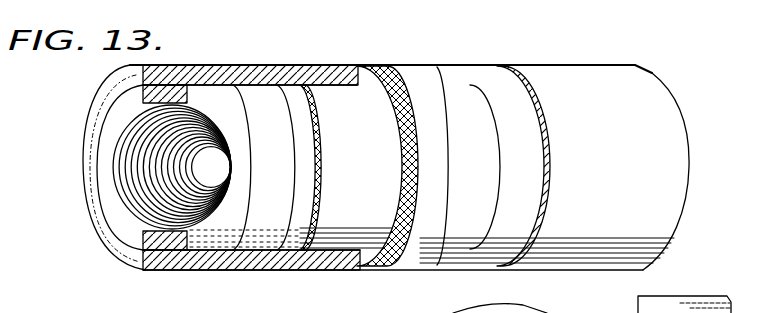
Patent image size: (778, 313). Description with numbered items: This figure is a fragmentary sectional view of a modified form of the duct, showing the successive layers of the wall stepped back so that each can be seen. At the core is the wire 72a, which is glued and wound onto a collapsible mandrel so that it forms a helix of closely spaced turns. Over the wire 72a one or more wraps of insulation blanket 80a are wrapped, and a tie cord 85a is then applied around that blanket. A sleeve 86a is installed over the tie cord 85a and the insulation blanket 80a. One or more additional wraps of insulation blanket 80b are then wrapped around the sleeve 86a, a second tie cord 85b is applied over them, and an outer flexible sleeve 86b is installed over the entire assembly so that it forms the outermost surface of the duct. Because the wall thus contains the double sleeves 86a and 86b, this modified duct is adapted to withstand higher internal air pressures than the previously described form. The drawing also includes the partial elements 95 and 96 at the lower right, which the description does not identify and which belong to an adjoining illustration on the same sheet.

The wire 72a is at (128, 203).
The insulation blanket 80a is at (127, 238).
The insulation blanket 80b is at (297, 65).
The tie cord 85a is at (255, 90).
The tie cord 85b is at (470, 90).
The sleeve 86a is at (357, 100).
The outer flexible sleeve 86b is at (650, 72).
The end portion 95 is at (600, 312).
The fitting 96 is at (700, 303).